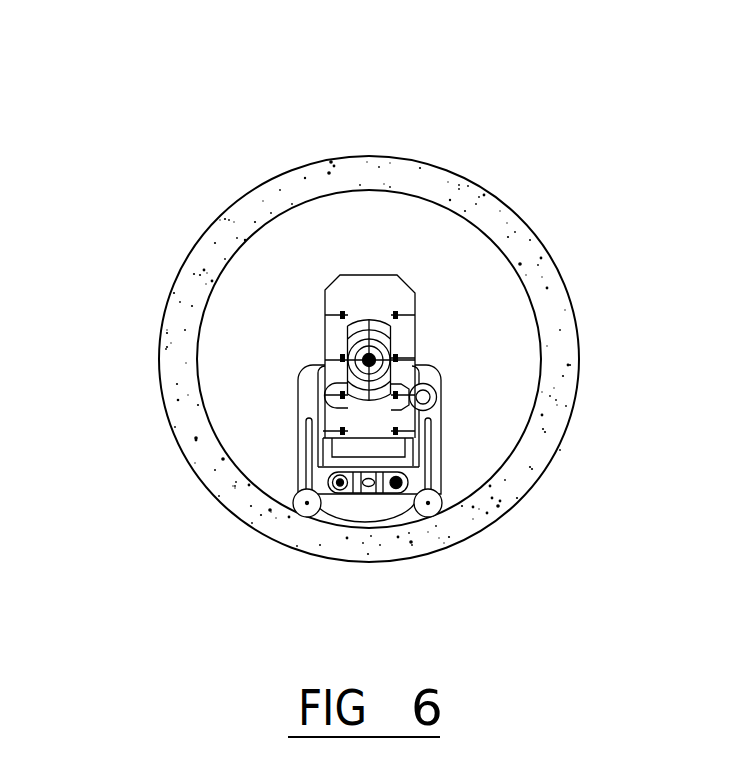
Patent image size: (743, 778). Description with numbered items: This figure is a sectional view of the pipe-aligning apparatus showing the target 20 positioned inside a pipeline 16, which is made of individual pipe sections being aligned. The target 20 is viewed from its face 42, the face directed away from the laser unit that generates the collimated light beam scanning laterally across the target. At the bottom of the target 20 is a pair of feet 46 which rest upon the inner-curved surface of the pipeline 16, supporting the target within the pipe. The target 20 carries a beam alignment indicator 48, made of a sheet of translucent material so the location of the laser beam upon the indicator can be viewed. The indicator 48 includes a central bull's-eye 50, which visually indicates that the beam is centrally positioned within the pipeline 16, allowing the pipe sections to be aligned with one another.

The pipeline 16 is at (443, 167).
The target 20 is at (468, 402).
The face 42 is at (345, 299).
The feet 46 is at (295, 493).
The beam alignment indicator 48 is at (376, 320).
The central bull's-eye 50 is at (366, 318).